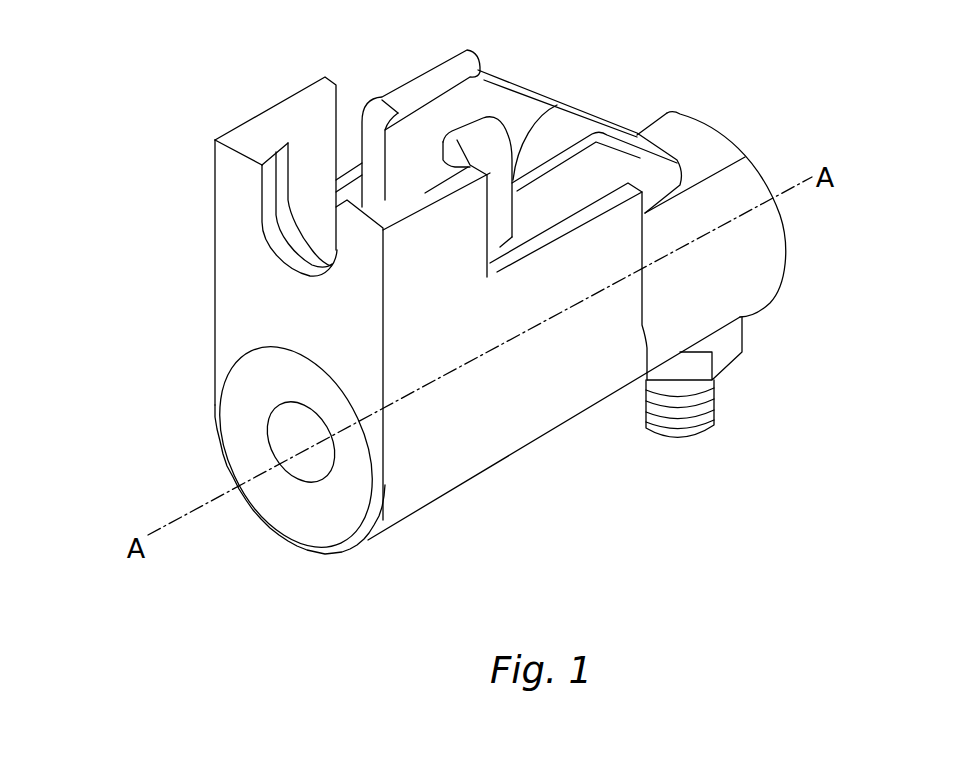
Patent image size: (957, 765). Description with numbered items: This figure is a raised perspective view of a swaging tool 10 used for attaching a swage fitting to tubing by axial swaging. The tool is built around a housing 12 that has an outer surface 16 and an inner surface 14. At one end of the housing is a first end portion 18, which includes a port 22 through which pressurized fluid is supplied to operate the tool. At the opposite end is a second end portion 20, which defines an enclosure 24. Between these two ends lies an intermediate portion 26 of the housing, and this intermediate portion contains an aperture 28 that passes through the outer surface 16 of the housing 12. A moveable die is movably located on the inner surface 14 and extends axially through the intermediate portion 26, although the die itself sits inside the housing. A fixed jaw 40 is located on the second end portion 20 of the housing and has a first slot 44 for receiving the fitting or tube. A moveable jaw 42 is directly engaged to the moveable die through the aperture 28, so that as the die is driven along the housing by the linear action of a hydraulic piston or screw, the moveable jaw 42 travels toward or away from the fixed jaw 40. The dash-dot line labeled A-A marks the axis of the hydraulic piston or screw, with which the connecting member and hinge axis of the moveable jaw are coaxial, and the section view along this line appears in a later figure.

The swaging tool 10 is at (783, 110).
The housing 12 is at (487, 453).
The inner surface 14 is at (323, 122).
The outer surface 16 is at (437, 230).
The first end portion 18 is at (783, 228).
The second end portion 20 is at (225, 302).
The port 22 is at (703, 428).
The enclosure 24 is at (368, 407).
The intermediate portion 26 is at (533, 405).
The aperture 28 is at (308, 163).
The fixed jaw 40 is at (258, 195).
The moveable jaw 42 is at (378, 122).
The first slot 44 is at (300, 217).